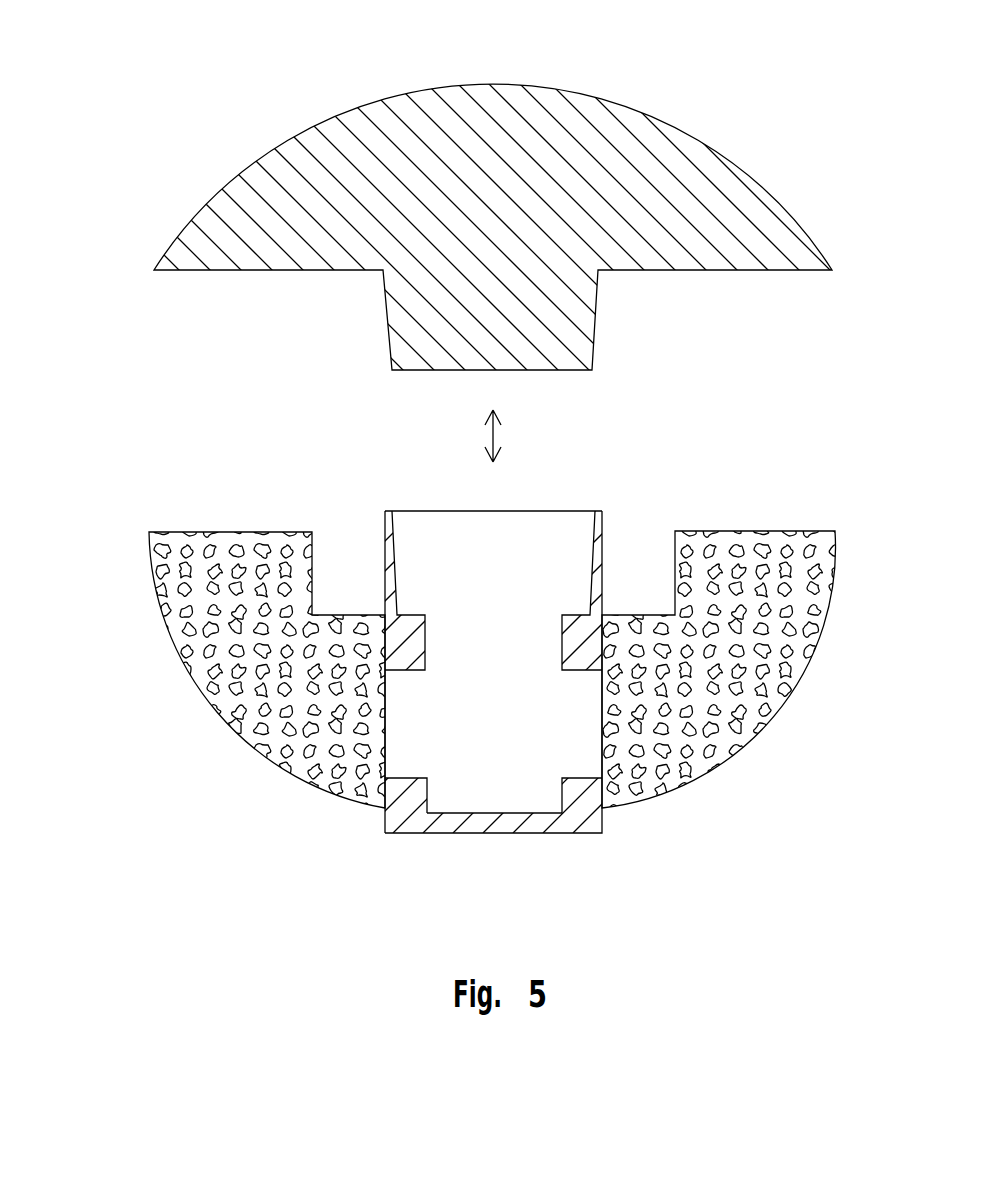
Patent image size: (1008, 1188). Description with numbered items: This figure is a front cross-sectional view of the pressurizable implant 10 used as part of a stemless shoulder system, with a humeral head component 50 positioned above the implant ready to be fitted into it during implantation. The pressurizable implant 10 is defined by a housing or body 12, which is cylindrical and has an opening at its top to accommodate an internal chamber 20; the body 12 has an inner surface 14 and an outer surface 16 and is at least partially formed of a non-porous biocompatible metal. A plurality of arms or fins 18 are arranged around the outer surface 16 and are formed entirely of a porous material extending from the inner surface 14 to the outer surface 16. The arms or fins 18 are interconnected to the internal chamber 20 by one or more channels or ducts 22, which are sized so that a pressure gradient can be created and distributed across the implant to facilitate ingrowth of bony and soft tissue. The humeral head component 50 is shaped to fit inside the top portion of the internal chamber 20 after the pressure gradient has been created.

The pressurizable implant 10 is at (148, 114).
The humeral head component 50 is at (612, 133).
The body 12 is at (610, 540).
The inner surface 14 is at (396, 565).
The outer surface 16 is at (384, 545).
The arms or fins 18 is at (180, 643).
The internal chamber 20 is at (530, 560).
The channels or ducts 22 is at (402, 740).